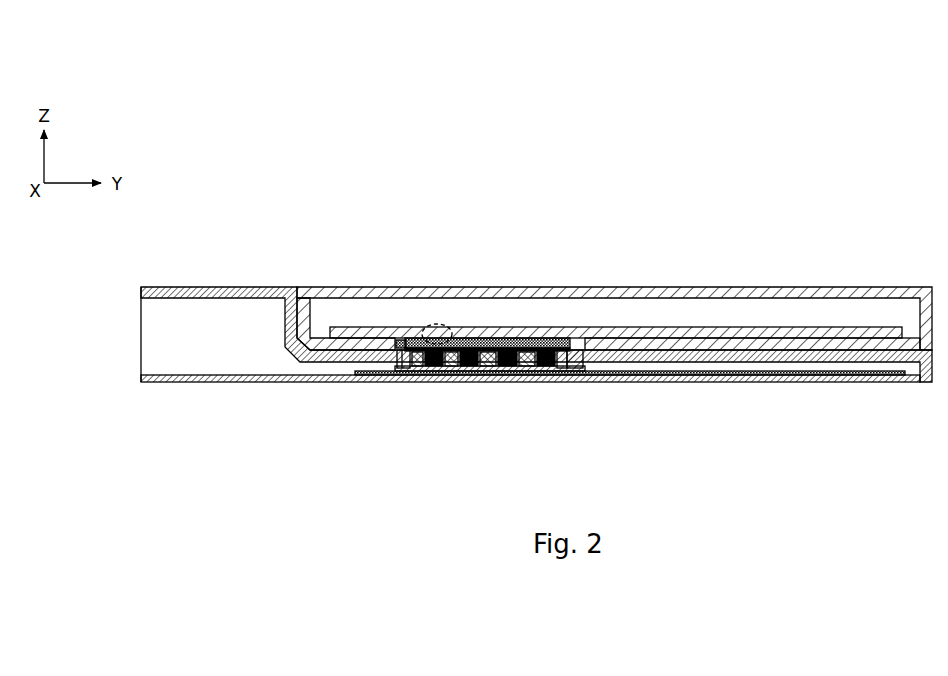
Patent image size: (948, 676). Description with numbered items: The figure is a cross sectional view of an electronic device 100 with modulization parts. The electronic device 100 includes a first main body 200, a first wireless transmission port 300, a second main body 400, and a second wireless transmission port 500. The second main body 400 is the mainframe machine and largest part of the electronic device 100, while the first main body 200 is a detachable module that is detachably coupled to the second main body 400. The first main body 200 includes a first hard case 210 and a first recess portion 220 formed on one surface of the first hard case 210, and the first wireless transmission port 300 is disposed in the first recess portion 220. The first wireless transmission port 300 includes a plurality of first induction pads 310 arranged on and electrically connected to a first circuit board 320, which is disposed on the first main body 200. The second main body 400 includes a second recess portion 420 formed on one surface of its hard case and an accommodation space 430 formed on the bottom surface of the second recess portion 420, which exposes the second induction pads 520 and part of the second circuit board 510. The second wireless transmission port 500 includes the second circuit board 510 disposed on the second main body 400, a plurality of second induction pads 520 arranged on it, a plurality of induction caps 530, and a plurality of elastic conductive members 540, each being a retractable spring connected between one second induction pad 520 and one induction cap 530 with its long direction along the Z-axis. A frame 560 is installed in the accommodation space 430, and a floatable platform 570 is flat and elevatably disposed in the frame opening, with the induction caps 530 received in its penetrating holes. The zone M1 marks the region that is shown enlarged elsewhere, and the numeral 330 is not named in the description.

The electronic device 100 is at (35, 67).
The first main body 200 is at (614, 259).
The first hard case 210 is at (748, 287).
The first recess portion 220 is at (619, 337).
The first wireless transmission port 300 is at (616, 270).
The first induction pads 310 is at (508, 338).
The first circuit board 320 is at (482, 228).
The display panel 330 is at (488, 327).
The second main body 400 is at (714, 383).
The second recess portion 420 is at (296, 285).
The accommodation space 430 is at (392, 346).
The second wireless transmission port 500 is at (619, 418).
The second circuit board 510 is at (408, 369).
The second induction pads 520 is at (450, 362).
The induction caps 530 is at (421, 366).
The elastic conductive members 540 is at (435, 362).
The frame 560 is at (490, 398).
The floatable platform 570 is at (398, 372).
The zone M1 is at (423, 330).